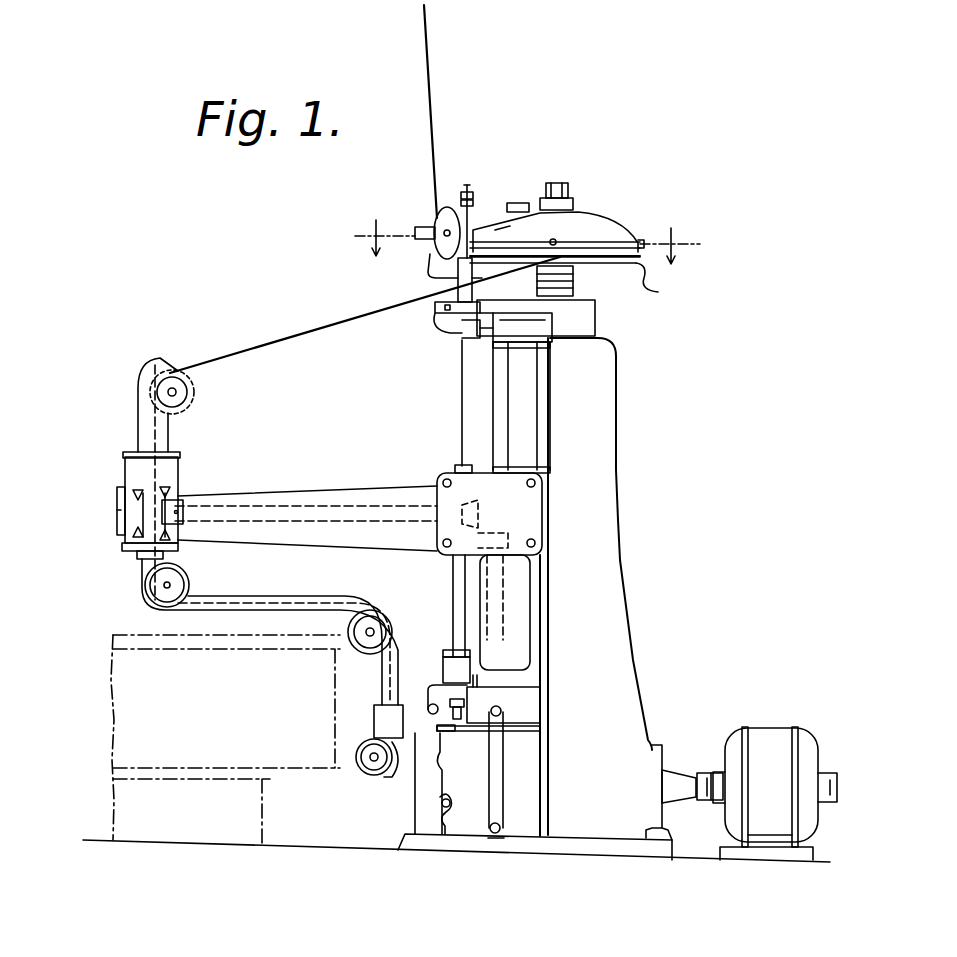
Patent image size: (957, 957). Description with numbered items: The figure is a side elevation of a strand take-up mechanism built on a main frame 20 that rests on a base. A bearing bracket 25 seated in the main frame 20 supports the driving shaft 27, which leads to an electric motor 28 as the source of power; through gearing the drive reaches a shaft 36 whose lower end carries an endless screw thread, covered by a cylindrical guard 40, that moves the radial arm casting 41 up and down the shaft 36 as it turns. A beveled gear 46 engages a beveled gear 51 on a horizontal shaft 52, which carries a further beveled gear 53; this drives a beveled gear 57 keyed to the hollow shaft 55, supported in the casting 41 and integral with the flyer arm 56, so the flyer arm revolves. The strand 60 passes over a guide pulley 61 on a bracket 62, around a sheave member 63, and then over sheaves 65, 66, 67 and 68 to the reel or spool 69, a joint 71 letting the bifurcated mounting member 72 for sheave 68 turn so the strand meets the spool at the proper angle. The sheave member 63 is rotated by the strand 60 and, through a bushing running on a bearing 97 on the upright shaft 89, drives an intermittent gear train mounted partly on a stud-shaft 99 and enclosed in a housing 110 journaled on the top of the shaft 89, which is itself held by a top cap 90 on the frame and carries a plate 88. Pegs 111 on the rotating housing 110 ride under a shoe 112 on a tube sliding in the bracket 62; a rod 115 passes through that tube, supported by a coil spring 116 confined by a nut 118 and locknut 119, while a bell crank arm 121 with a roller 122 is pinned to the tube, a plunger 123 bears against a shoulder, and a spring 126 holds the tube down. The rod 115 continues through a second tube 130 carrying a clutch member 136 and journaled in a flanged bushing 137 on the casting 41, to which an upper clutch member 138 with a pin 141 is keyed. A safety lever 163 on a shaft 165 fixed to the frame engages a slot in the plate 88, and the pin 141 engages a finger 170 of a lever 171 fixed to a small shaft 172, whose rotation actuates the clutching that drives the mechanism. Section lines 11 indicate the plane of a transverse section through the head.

The section line 11 is at (527, 231).
The main frame 20 is at (636, 560).
The bearing bracket 25 is at (660, 745).
The driving shaft 27 is at (706, 773).
The electric motor 28 is at (775, 742).
The shaft 36 is at (505, 404).
The cylindrical guard 40 is at (485, 595).
The radial arm casting 41 is at (429, 468).
The beveled gear 46 is at (527, 541).
The beveled gear 51 is at (500, 502).
The horizontal shaft 52 is at (305, 510).
The beveled gear 53 is at (183, 485).
The hollow shaft 55 is at (115, 532).
The flyer arm 56 is at (318, 590).
The beveled gear 57 is at (170, 476).
The strand 60 is at (433, 90).
The guide pulley 61 is at (422, 220).
The bracket 62 is at (433, 268).
The sheave member 63 is at (630, 272).
The sheave 65 is at (194, 393).
The sheave 66 is at (185, 580).
The sheave 67 is at (348, 632).
The sheave 68 is at (356, 752).
The reel or spool 69 is at (270, 770).
The joint 71 is at (374, 714).
The bifurcated mounting member 72 is at (392, 778).
The plate 88 is at (480, 732).
The upright shaft 89 is at (560, 183).
The top cap 90 is at (493, 330).
The bearing 97 is at (573, 292).
The stud-shaft 99 is at (516, 203).
The housing 110 is at (612, 222).
The pegs 111 is at (652, 232).
The shoe 112 is at (526, 223).
The rod 115 is at (466, 185).
The coil spring 116 is at (450, 198).
The nut 118 is at (474, 203).
The locknut 119 is at (470, 192).
The bell crank arm 121 is at (458, 322).
The roller 122 is at (540, 321).
The plunger 123 is at (446, 315).
The spring 126 is at (472, 302).
The second tube 130 is at (456, 578).
The clutch member 136 is at (468, 723).
The flanged bushing 137 is at (445, 650).
The upper clutch member 138 is at (425, 690).
The pin 141 is at (490, 686).
The safety lever 163 is at (445, 745).
The shaft 165 is at (432, 836).
The finger 170 is at (520, 714).
The lever 171 is at (504, 785).
The small shaft 172 is at (490, 838).